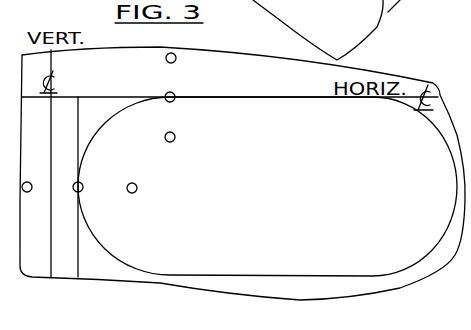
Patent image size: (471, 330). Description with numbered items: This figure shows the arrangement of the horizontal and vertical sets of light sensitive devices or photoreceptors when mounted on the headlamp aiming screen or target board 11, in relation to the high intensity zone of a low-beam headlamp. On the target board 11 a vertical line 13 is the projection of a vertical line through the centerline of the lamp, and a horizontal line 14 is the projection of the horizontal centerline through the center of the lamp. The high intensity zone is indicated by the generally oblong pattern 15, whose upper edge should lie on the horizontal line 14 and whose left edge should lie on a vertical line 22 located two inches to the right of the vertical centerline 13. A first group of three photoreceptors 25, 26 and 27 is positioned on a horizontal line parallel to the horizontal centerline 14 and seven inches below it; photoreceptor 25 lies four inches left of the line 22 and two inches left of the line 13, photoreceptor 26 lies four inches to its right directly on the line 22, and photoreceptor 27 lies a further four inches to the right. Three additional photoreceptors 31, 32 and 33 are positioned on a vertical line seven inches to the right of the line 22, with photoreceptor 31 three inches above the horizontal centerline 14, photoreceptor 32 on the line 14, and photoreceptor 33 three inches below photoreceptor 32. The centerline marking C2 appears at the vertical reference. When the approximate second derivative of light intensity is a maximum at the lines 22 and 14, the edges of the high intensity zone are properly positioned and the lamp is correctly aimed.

The headlamp aiming screen or target board 11 is at (155, 283).
The vertical line 13 is at (50, 121).
The horizontal line 14 is at (242, 97).
The high intensity zone 15 is at (348, 278).
The vertical line 22 is at (78, 133).
The photoreceptor or light sensitive device 25 is at (30, 191).
The photoreceptor or light sensitive transducer 26 is at (82, 192).
The light sensitive device or photoreceptor 27 is at (135, 192).
The photoreceptor or light sensitive device 31 is at (175, 62).
The light sensitive device or photoreceptor 32 is at (165, 93).
The light sensitive device or photoreceptor 33 is at (173, 141).
The centerline C2 is at (55, 75).